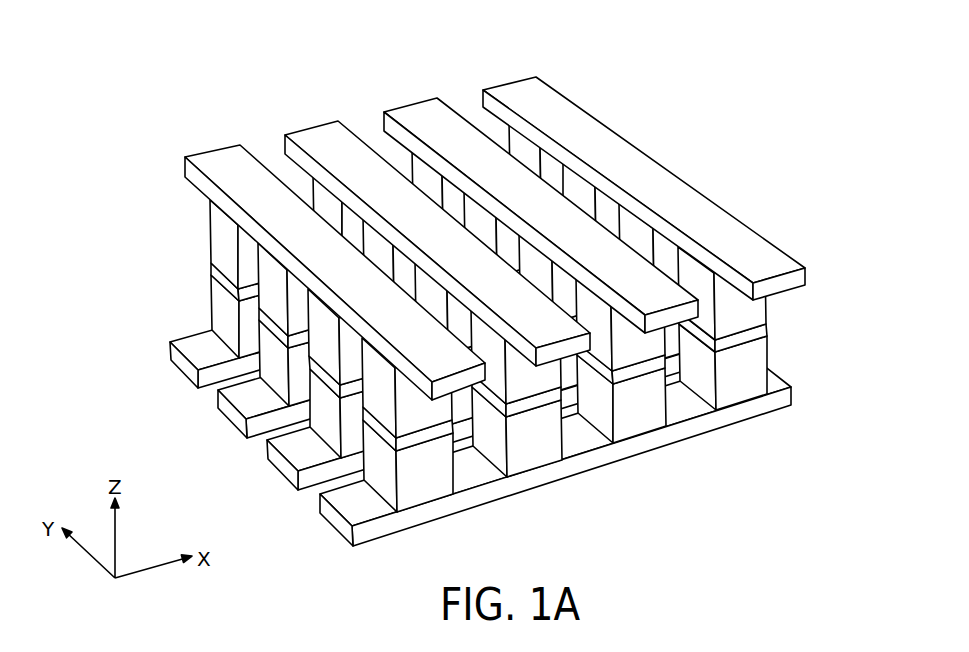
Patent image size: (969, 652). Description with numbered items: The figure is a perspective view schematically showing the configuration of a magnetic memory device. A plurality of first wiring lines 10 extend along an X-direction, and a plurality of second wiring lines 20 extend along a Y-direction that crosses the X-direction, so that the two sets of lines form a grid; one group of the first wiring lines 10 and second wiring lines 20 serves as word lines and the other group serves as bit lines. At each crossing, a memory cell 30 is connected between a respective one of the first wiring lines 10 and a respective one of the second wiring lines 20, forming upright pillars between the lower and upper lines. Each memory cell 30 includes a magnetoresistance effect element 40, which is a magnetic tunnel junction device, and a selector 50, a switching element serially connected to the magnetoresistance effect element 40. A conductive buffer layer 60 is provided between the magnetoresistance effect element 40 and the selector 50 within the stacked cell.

The first wiring lines 10 is at (205, 349).
The second wiring lines 20 is at (220, 163).
The memory cells 30 is at (559, 316).
The magnetoresistance effect element 40 is at (752, 360).
The selector 50 is at (768, 293).
The conductive buffer layer 60 is at (765, 335).